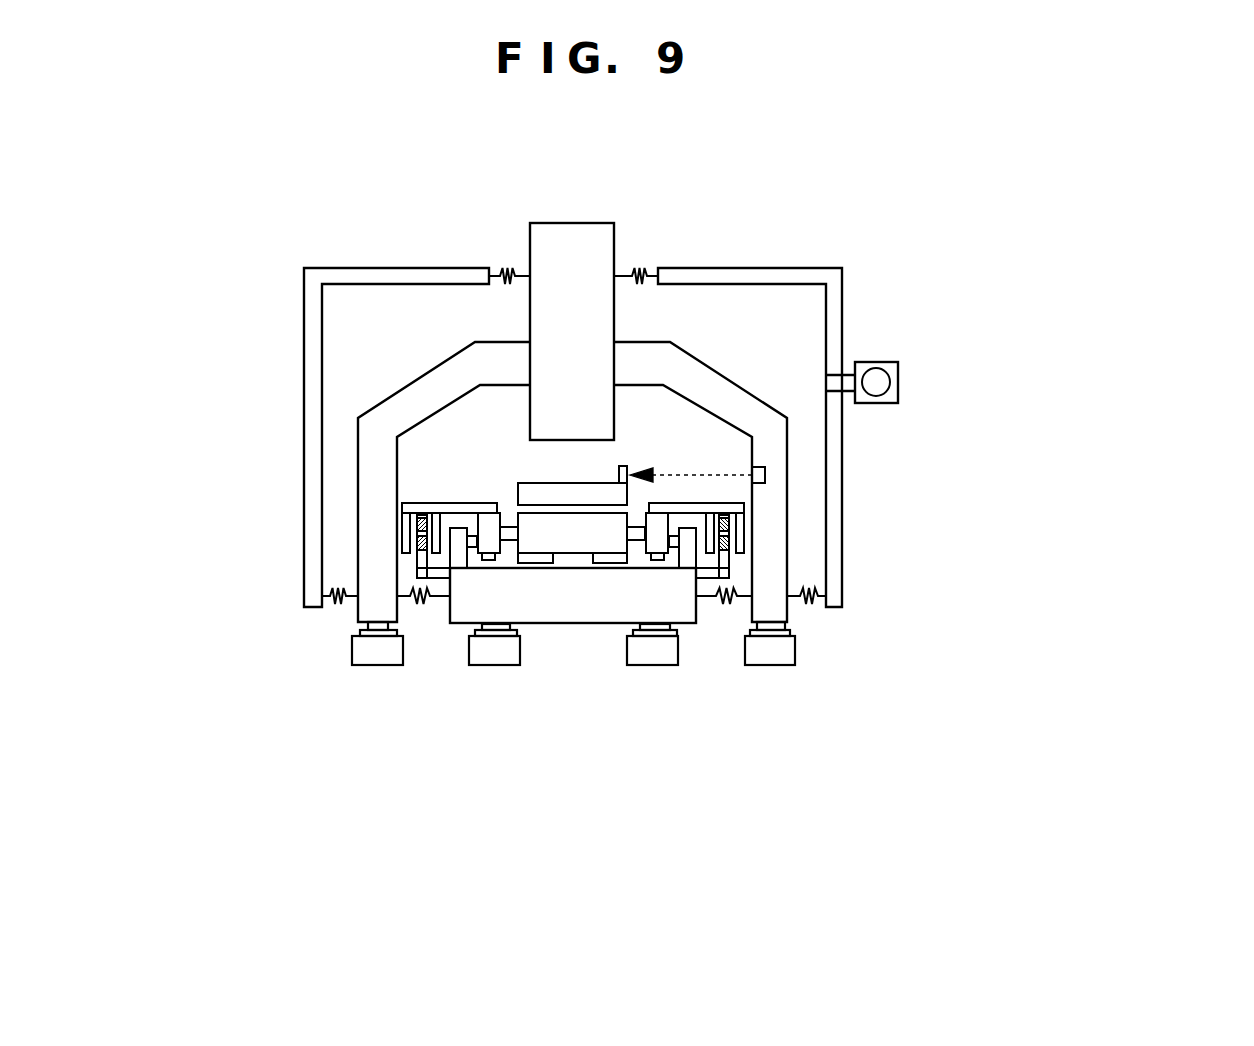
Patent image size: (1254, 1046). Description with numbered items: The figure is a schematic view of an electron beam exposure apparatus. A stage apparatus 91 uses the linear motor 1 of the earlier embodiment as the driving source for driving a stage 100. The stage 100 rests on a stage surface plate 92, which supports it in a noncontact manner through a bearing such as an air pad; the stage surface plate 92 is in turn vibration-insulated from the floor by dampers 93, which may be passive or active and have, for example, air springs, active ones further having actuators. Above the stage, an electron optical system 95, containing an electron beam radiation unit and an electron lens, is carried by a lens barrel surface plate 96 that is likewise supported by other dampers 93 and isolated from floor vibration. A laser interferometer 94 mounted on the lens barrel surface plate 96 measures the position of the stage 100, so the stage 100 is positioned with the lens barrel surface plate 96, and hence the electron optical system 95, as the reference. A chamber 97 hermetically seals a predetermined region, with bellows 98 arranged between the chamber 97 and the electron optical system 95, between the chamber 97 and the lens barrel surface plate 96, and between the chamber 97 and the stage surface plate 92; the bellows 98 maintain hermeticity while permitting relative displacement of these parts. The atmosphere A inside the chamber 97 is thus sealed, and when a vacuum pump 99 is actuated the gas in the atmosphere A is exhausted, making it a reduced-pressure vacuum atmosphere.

The linear motor 1 is at (425, 495).
The stage apparatus 91 is at (385, 389).
The stage surface plate 92 is at (572, 603).
The dampers 93 is at (652, 650).
The laser interferometer 94 is at (765, 470).
The electron optical system 95 is at (555, 237).
The lens barrel surface plate 96 is at (762, 527).
The chamber 97 is at (835, 573).
The bellows 98 is at (503, 267).
The vacuum pump 99 is at (877, 362).
The stage 100 is at (533, 475).
The atmosphere A is at (680, 430).